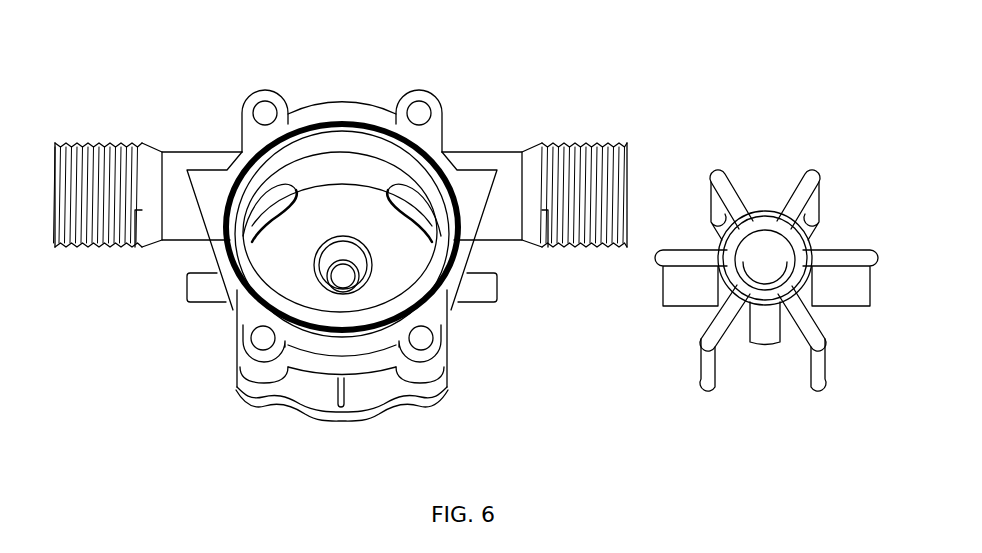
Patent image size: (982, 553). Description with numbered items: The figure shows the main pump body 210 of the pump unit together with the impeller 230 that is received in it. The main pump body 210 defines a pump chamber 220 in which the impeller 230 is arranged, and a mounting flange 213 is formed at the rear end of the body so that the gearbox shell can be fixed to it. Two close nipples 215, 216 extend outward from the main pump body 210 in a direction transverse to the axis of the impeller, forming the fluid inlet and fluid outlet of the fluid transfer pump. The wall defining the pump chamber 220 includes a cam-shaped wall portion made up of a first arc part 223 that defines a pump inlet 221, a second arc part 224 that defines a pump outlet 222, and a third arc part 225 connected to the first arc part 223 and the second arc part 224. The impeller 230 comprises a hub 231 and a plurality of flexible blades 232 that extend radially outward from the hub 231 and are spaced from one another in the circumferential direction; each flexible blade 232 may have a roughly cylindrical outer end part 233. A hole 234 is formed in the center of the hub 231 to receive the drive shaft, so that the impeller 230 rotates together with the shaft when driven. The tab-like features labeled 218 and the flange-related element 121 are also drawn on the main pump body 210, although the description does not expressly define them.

The main pump body 210 is at (167, 65).
The mounting flange 213 is at (310, 415).
The close nipple 215 is at (585, 250).
The close nipple 216 is at (110, 248).
The mounting tab 218 is at (205, 303).
The pump chamber 220 is at (415, 272).
The pump inlet 221 is at (447, 150).
The pump outlet 222 is at (278, 188).
The first arc part 223 is at (392, 175).
The second arc part 224 is at (290, 160).
The third arc part 225 is at (327, 160).
The mounting flange 121 is at (377, 108).
The impeller 230 is at (687, 143).
The hub 231 is at (767, 330).
The flexible blade 232 is at (793, 200).
The outer end part 233 is at (810, 180).
The hole 234 is at (783, 258).